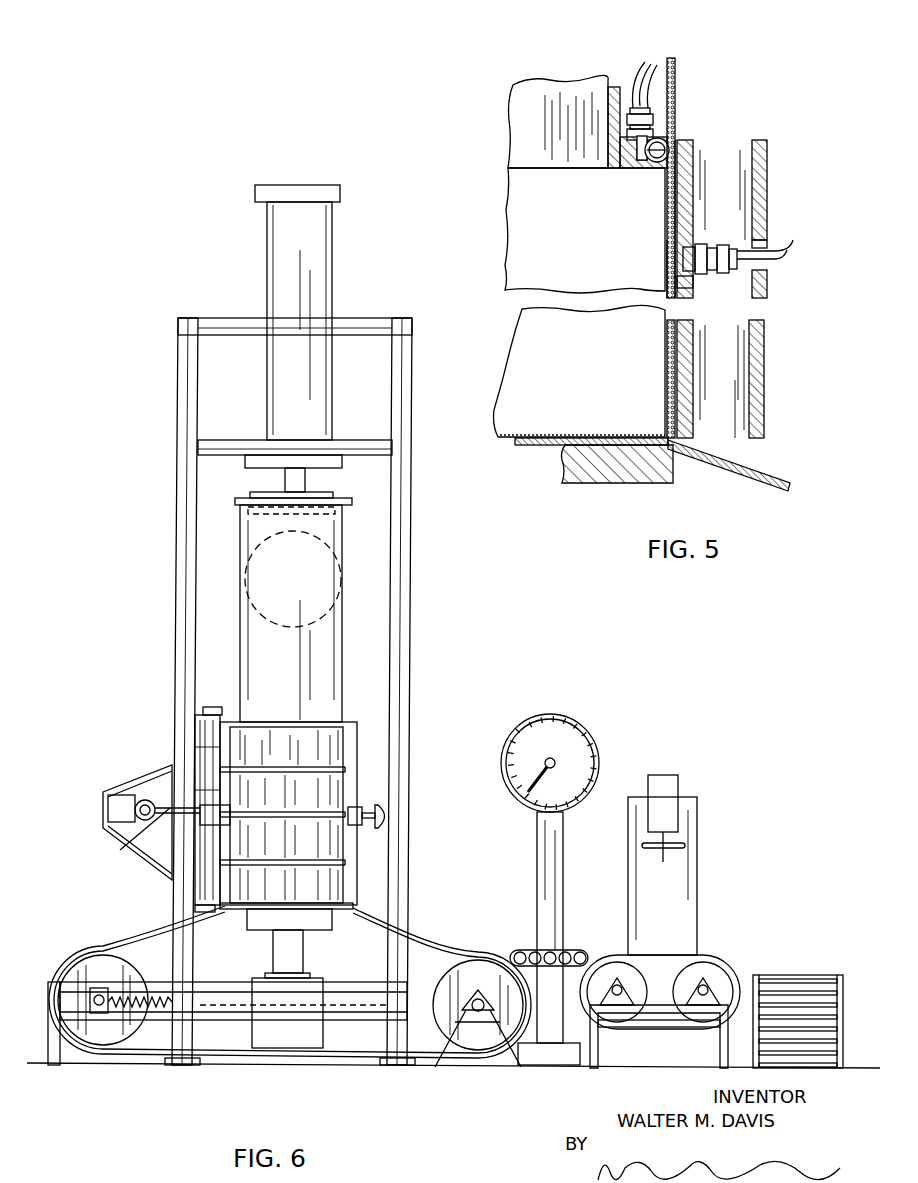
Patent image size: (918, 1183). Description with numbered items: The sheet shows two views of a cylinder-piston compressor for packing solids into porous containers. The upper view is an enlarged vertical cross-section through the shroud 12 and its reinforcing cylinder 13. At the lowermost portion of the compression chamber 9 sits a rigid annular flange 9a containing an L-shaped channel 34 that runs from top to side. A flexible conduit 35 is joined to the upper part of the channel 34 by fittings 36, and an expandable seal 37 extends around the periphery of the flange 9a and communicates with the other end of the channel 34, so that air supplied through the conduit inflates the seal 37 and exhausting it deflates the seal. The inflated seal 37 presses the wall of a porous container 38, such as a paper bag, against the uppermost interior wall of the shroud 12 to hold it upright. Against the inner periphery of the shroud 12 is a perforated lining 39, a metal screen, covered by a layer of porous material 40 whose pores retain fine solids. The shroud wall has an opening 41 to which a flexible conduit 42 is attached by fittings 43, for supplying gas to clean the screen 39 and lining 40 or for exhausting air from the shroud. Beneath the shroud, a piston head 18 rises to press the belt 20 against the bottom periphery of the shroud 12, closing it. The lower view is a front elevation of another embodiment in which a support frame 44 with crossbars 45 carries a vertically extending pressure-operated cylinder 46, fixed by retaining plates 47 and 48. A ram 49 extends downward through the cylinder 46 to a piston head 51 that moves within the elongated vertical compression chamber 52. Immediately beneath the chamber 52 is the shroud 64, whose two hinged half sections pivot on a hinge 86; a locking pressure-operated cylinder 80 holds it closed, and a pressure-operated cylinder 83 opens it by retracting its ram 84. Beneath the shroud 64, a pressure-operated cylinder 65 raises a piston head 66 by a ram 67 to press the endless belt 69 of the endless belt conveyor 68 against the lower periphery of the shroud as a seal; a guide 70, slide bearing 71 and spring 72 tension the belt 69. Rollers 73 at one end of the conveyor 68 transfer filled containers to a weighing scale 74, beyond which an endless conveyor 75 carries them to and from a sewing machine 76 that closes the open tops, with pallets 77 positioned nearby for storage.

In FIG. 5, the compression chamber 9 is at (616, 95).
In FIG. 5, the annular transition member or flange 9a is at (662, 138).
In FIG. 5, the shroud 12 is at (690, 365).
In FIG. 5, the reinforcing cylinder 13 is at (765, 365).
In FIG. 5, the piston head 18 is at (590, 485).
In FIG. 5, the belt 20 is at (760, 489).
In FIG. 5, the L-shaped channel 34 is at (640, 168).
In FIG. 5, the flexible conduit 35 is at (651, 62).
In FIG. 5, the fittings 36 is at (652, 112).
In FIG. 5, the expandable seal 37 is at (668, 148).
In FIG. 5, the porous container 38 is at (672, 62).
In FIG. 5, the perforated lining 39 is at (668, 215).
In FIG. 5, the layer of porous material 40 is at (668, 270).
In FIG. 5, the opening or conduit 41 is at (694, 283).
In FIG. 5, the flexible conduit 42 is at (790, 252).
In FIG. 5, the fittings 43 is at (702, 246).
In FIG. 6, the support frame 44 is at (178, 615).
In FIG. 6, the crossbars 45 is at (238, 325).
In FIG. 6, the pressure-operated cylinder 46 is at (332, 265).
In FIG. 6, the retaining plate 47 is at (340, 196).
In FIG. 6, the retaining plate 48 is at (342, 462).
In FIG. 6, the ram 49 is at (305, 482).
In FIG. 6, the piston head 51 is at (245, 512).
In FIG. 6, the compression chamber 52 is at (330, 672).
In FIG. 6, the shroud 64 is at (330, 760).
In FIG. 6, the pressure-operated cylinder 65 is at (323, 1040).
In FIG. 6, the piston head 66 is at (324, 928).
In FIG. 6, the ram 67 is at (273, 950).
In FIG. 6, the endless belt conveyor 68 is at (60, 985).
In FIG. 6, the endless belt 69 is at (125, 938).
In FIG. 6, the guide 70 is at (86, 987).
In FIG. 6, the slide bearing 71 is at (99, 1013).
In FIG. 6, the spring 72 is at (150, 1005).
In FIG. 6, the rollers 73 is at (520, 953).
In FIG. 6, the weighing scale 74 is at (598, 750).
In FIG. 6, the endless conveyor 75 is at (705, 955).
In FIG. 6, the sewing machine 76 is at (690, 797).
In FIG. 6, the pallets 77 is at (790, 975).
In FIG. 6, the locking pressure-operated cylinder 80 is at (389, 818).
In FIG. 6, the pressure-operated cylinder 83 is at (120, 805).
In FIG. 6, the ram 84 is at (125, 852).
In FIG. 6, the hinge 86 is at (205, 730).